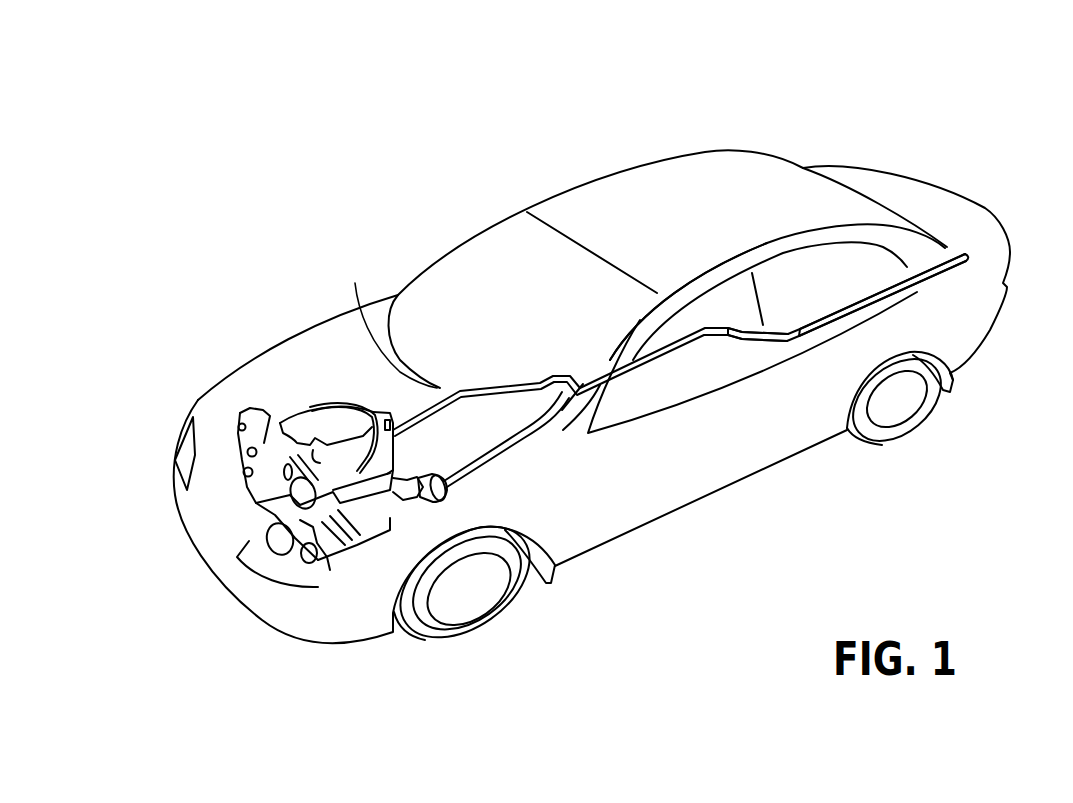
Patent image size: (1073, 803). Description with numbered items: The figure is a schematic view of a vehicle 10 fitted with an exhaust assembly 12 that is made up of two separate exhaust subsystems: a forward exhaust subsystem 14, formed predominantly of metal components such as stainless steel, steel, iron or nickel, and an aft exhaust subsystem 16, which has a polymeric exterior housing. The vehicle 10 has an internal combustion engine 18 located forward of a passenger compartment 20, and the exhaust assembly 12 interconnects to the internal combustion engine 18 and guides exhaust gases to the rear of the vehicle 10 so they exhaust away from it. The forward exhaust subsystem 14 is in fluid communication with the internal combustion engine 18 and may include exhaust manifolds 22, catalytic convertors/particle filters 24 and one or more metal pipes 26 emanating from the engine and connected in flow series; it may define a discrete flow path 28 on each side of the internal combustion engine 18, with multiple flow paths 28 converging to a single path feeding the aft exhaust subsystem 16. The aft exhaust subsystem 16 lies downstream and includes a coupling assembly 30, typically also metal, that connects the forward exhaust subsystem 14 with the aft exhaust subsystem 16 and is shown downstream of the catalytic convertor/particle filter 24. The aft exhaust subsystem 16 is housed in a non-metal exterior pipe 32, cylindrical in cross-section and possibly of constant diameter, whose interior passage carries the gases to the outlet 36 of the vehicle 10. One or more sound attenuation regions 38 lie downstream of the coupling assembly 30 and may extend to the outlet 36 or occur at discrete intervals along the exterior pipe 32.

The vehicle 10 is at (826, 121).
The exhaust assembly 12 is at (591, 354).
The forward exhaust subsystem 14 is at (400, 540).
The aft exhaust subsystem 16 is at (683, 373).
The internal combustion engine 18 is at (273, 484).
The passenger compartment 20 is at (472, 303).
The exhaust manifold 22 is at (390, 478).
The catalytic convertor/particle filter 24 is at (432, 497).
The metal pipe 26 is at (398, 410).
The flow path 28 is at (389, 318).
The coupling assembly 30 is at (496, 468).
The exterior pipe 32 is at (776, 343).
The outlet 36 is at (968, 252).
The sound attenuation region 38 is at (716, 308).